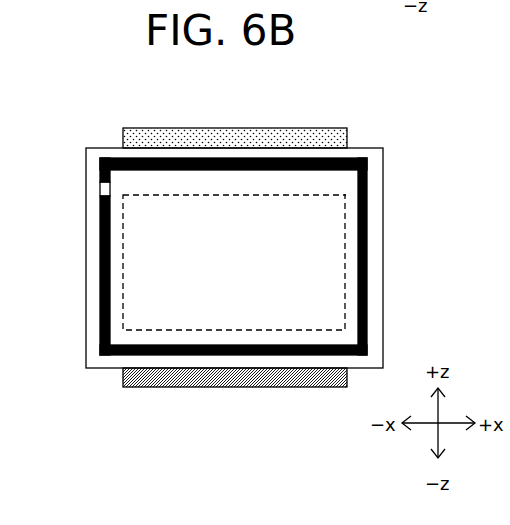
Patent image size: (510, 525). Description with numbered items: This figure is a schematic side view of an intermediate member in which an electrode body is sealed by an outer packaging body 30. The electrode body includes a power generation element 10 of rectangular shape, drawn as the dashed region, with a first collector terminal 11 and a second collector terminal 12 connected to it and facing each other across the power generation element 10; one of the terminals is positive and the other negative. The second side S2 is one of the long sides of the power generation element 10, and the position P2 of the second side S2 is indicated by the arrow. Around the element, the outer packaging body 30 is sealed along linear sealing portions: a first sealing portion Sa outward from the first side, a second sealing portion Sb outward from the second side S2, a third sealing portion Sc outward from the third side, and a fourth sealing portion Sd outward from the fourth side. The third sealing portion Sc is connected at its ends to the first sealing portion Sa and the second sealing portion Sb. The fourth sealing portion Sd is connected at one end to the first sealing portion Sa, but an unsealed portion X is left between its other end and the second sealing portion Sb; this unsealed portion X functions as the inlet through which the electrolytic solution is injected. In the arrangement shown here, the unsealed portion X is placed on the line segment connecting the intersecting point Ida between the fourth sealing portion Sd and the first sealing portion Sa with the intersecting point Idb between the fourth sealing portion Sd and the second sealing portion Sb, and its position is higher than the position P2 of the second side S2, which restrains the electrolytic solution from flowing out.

The power generation element 10 is at (345, 292).
The first collector terminal 11 is at (237, 383).
The second collector terminal 12 is at (230, 133).
The outer packaging body 30 is at (373, 150).
The first sealing portion Sa is at (167, 355).
The second sealing portion Sb is at (167, 158).
The third sealing portion Sc is at (367, 257).
The fourth sealing portion Sd is at (98, 258).
The second side S2 is at (308, 183).
The position of the second side P2 is at (346, 195).
The unsealed portion X is at (100, 188).
The intersecting point Ida is at (106, 356).
The intersecting point Idb is at (102, 161).